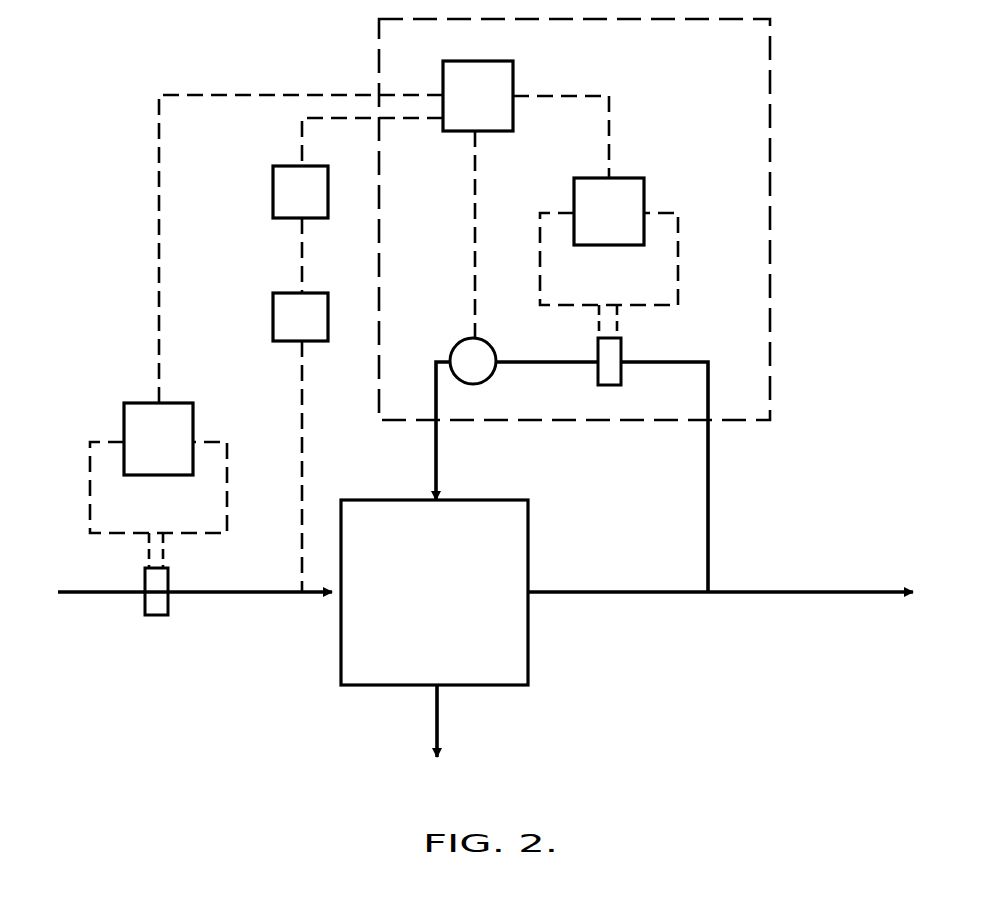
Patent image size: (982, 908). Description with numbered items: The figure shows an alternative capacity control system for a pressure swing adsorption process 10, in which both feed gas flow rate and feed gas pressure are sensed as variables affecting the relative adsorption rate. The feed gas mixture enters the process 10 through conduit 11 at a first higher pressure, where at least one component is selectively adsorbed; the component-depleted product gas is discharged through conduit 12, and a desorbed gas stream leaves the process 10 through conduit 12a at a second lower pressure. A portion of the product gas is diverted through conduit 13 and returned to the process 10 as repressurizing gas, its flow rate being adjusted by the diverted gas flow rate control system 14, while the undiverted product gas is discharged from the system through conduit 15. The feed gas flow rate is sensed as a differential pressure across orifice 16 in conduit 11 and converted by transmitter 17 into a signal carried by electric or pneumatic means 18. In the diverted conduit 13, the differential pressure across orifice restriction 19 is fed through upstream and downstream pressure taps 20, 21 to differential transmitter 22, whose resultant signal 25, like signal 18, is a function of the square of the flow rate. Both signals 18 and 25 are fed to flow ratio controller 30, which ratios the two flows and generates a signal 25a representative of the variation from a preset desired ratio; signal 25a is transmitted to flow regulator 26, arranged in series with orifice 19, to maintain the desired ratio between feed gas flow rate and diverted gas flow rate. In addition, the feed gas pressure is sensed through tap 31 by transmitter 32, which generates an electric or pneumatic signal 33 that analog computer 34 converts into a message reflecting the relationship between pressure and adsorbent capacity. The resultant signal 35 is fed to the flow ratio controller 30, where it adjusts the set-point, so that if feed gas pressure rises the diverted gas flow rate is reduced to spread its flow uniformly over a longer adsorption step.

The pressure swing adsorption process 10 is at (528, 645).
The feed conduit 11 is at (92, 593).
The product gas conduit 12 is at (625, 593).
The desorbed gas conduit 12a is at (435, 718).
The diverted product gas conduit 13 is at (708, 505).
The diverted gas flow rate control system 14 is at (770, 183).
The discharge conduit 15 is at (762, 595).
The orifice 16 is at (168, 603).
The transmitter 17 is at (193, 420).
The control signal means 18 is at (159, 193).
The orifice restriction 19 is at (621, 352).
The upstream pressure tap 20 is at (678, 263).
The downstream pressure tap 21 is at (540, 268).
The differential transmitter 22 is at (644, 190).
The diverted flow signal 25 is at (609, 130).
The ratio variation signal 25a is at (475, 202).
The flow regulator 26 is at (455, 345).
The flow ratio controller 30 is at (513, 78).
The pressure tap 31 is at (298, 585).
The pressure transmitter 32 is at (273, 323).
The pressure signal 33 is at (305, 255).
The analog computer 34 is at (273, 197).
The set-point signal 35 is at (298, 148).